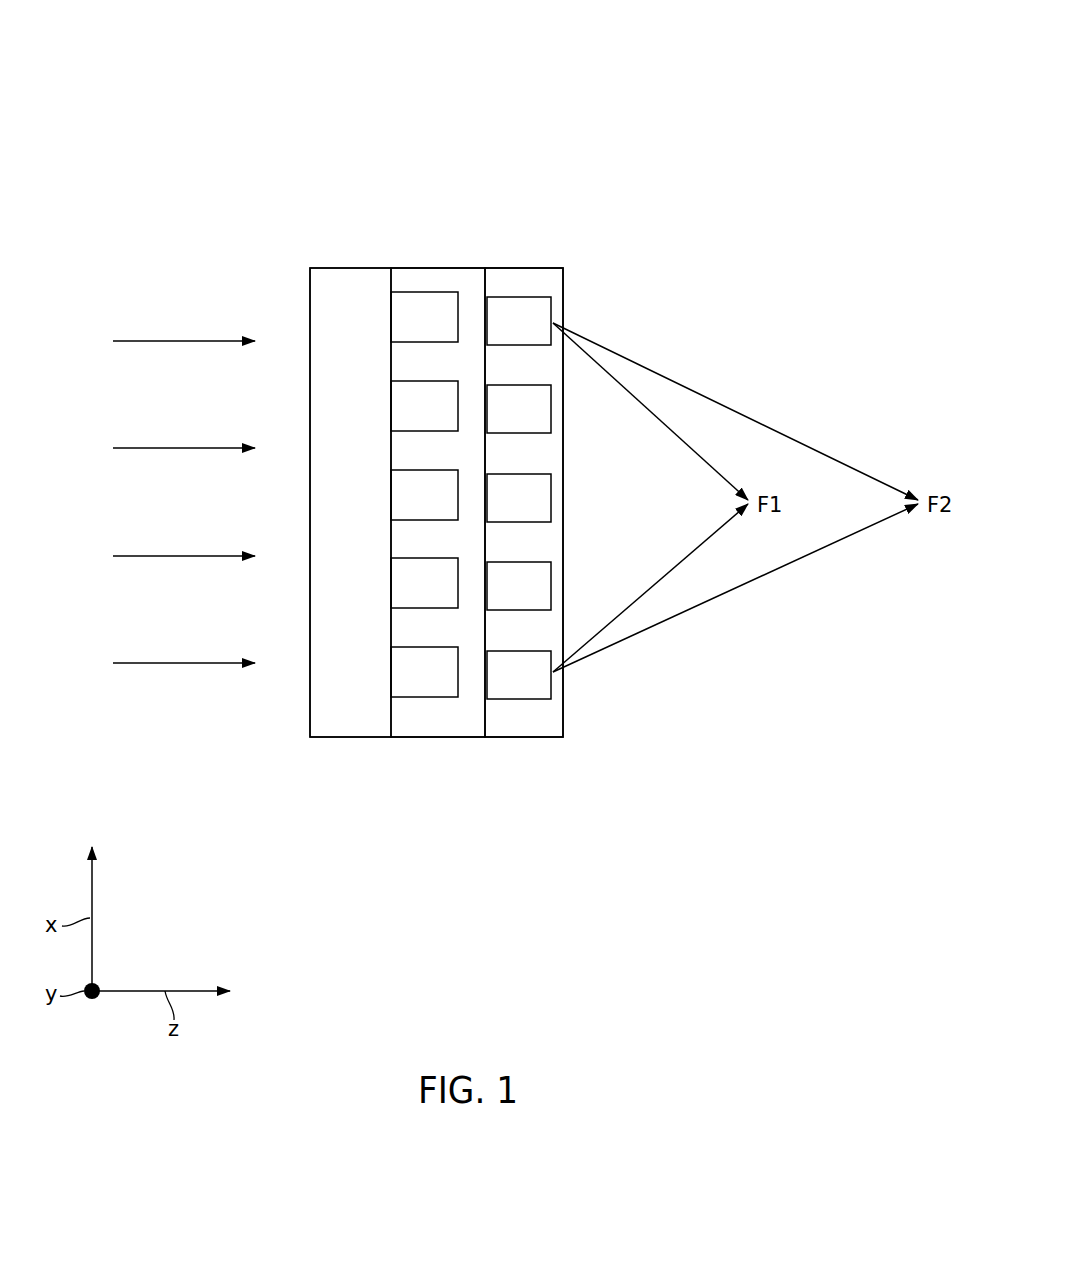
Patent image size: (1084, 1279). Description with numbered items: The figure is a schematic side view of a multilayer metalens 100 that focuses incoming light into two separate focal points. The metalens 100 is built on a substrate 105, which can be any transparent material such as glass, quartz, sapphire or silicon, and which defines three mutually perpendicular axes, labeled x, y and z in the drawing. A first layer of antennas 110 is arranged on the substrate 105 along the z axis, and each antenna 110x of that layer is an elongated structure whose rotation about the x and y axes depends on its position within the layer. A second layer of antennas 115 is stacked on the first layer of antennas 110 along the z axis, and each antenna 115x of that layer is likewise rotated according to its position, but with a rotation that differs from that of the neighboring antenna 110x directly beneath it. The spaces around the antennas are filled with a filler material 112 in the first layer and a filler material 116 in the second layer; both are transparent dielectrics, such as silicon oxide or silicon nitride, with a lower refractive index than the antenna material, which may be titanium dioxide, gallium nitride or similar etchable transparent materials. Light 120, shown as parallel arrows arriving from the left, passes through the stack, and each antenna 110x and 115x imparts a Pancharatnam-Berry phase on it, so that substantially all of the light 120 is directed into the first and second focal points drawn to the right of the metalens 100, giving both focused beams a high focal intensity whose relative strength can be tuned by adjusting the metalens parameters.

The multilayer metalens 100 is at (799, 49).
The substrate 105 is at (349, 706).
The first layer of antennas 110 is at (437, 740).
The antenna of the first layer 110x is at (448, 312).
The filler material 112 is at (402, 276).
The second layer of antennas 115 is at (521, 740).
The antenna of the second layer 115x is at (518, 315).
The filler material 116 is at (533, 719).
The light 120 is at (183, 665).